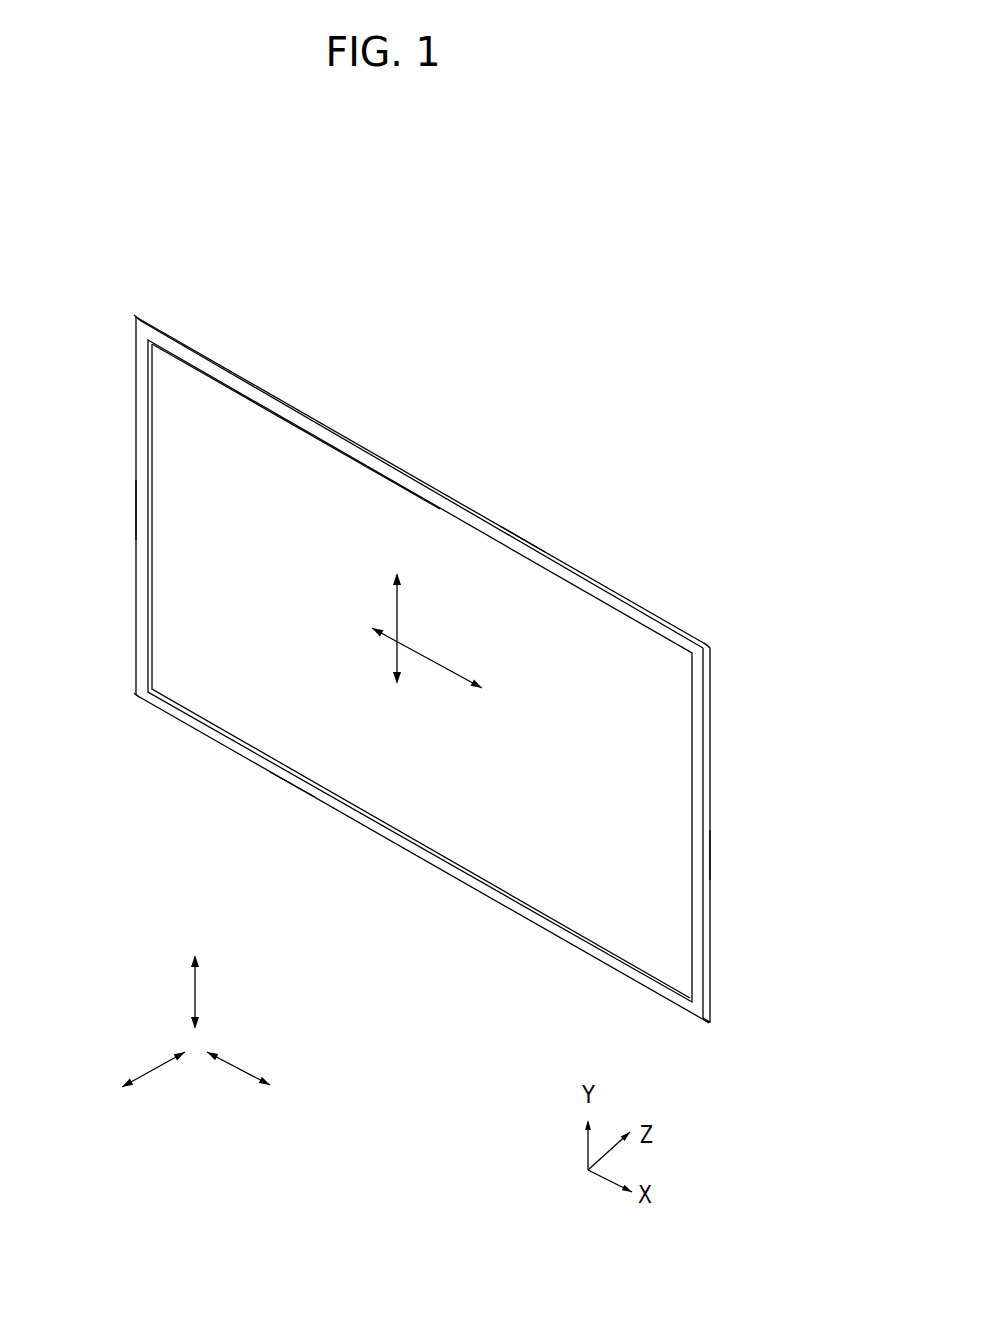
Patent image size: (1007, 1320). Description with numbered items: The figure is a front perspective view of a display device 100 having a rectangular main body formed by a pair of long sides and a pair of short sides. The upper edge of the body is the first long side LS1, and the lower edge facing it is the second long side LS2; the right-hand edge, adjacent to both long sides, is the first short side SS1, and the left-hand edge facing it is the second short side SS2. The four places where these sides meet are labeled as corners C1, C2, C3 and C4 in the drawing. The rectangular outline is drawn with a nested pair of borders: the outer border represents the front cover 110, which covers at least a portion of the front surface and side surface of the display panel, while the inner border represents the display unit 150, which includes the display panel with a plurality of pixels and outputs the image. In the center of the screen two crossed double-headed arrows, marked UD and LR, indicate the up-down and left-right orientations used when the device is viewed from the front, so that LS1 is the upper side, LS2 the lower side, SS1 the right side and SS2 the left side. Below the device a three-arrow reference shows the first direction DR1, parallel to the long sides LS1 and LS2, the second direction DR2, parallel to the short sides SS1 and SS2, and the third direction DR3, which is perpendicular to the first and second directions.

The display device 100 is at (97, 190).
The front cover 110 is at (433, 502).
The display unit 150 is at (335, 476).
The first corner C1 is at (707, 645).
The second corner C2 is at (137, 316).
The third corner C3 is at (136, 697).
The fourth corner C4 is at (707, 1022).
The first short side SS1 is at (711, 856).
The second short side SS2 is at (135, 506).
The first long side LS1 is at (523, 540).
The second long side LS2 is at (290, 783).
The up-down direction UD is at (394, 612).
The left-right direction LR is at (442, 670).
The first direction DR1 is at (259, 1083).
The second direction DR2 is at (193, 978).
The third direction DR3 is at (131, 1082).